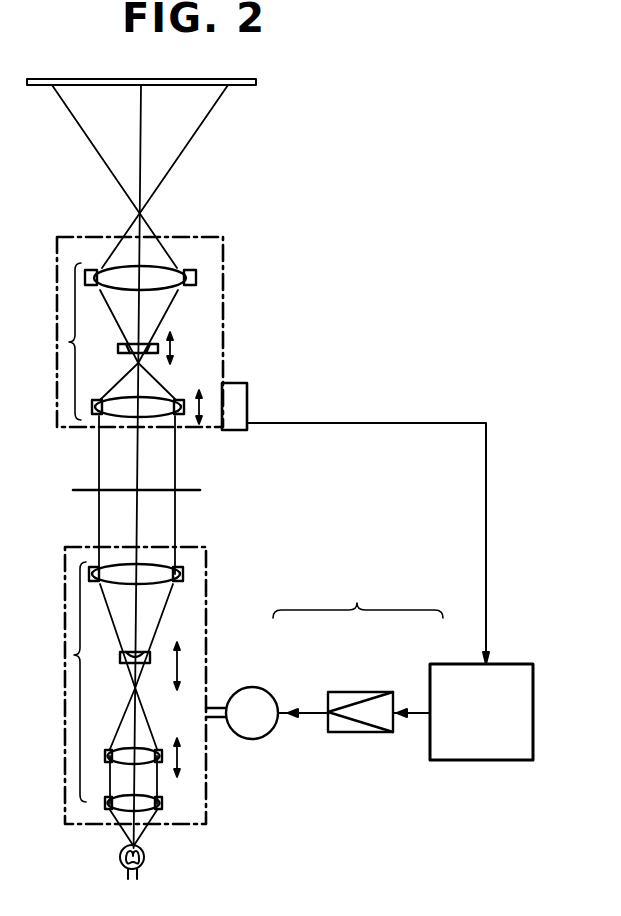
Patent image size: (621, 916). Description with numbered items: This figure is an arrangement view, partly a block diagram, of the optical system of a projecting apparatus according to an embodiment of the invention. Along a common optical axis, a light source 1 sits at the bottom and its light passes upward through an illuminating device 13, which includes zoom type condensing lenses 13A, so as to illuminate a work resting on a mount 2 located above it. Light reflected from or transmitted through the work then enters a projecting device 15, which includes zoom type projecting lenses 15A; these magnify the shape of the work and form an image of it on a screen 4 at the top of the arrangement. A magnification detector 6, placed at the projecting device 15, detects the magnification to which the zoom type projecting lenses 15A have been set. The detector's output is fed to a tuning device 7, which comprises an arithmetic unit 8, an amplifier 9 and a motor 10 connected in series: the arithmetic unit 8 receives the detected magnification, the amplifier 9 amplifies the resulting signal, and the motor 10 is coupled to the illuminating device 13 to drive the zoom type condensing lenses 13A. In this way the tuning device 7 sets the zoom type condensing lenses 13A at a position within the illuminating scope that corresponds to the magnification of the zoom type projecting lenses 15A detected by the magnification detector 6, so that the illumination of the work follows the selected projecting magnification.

The light source 1 is at (145, 860).
The mount 2 is at (200, 490).
The screen 4 is at (250, 86).
The magnification detector 6 is at (247, 403).
The tuning device 7 is at (358, 596).
The arithmetic unit 8 is at (445, 664).
The amplifier 9 is at (357, 692).
The motor 10 is at (252, 687).
The illuminating device 13 is at (207, 602).
The zoom type condensing lenses 13A is at (74, 655).
The projecting device 15 is at (223, 300).
The zoom type projecting lenses 15A is at (69, 342).